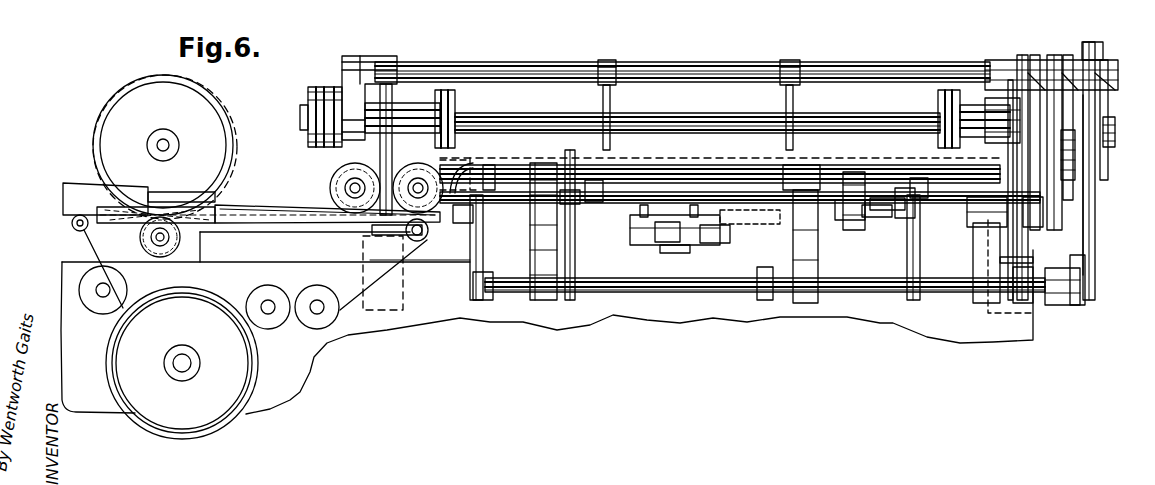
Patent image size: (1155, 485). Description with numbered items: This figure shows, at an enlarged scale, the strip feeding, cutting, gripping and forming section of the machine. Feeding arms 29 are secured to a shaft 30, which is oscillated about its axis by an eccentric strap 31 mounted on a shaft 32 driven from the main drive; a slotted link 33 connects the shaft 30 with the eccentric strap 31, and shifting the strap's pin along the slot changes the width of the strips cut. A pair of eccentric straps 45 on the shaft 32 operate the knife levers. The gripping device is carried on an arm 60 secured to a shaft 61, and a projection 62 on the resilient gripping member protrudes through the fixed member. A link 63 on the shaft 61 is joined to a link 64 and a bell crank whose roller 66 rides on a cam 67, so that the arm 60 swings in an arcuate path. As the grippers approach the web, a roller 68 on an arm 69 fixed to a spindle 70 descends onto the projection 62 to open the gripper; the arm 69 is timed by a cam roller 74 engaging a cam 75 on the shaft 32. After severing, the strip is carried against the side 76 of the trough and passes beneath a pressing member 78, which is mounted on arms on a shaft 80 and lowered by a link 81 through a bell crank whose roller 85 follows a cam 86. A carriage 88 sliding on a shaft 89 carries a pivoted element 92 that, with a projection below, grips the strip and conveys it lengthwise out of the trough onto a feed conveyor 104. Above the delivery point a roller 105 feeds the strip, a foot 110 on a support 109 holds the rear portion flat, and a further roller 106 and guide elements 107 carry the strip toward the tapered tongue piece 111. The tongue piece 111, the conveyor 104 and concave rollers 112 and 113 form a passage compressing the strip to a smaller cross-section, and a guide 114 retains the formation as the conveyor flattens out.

The arms 29 is at (603, 135).
The shaft 30 is at (420, 66).
The eccentric strap 31 is at (304, 104).
The shaft 32 is at (665, 120).
The link 33 is at (352, 100).
The eccentric straps 45 is at (456, 104).
The arm 60 is at (470, 275).
The shaft 61 is at (612, 296).
The projection 62 is at (878, 182).
The link 63 is at (1082, 292).
The link 64 is at (1085, 245).
The roller 66 is at (1110, 140).
The cam 67 is at (1102, 170).
The roller 68 is at (902, 190).
The arm 69 is at (592, 160).
The spindle 70 is at (635, 170).
The cam roller 74 is at (1010, 122).
The cam 75 is at (1040, 180).
The side 76 is at (490, 212).
The pressing member 78 is at (630, 222).
The shaft 80 is at (862, 222).
The link 81 is at (1035, 220).
The roller 85 is at (1075, 152).
The cam 86 is at (1070, 145).
The carriage 88 is at (677, 253).
The shaft 89 is at (720, 233).
The element 92 is at (675, 182).
The feed conveyor 104 is at (388, 268).
The roller 105 is at (452, 172).
The roller 106 is at (332, 175).
The guide elements 107 is at (372, 230).
The support 109 is at (515, 172).
The foot 110 is at (425, 252).
The tongue piece 111 is at (305, 205).
The roller 112 is at (135, 105).
The roller 113 is at (177, 256).
The guide 114 is at (80, 192).